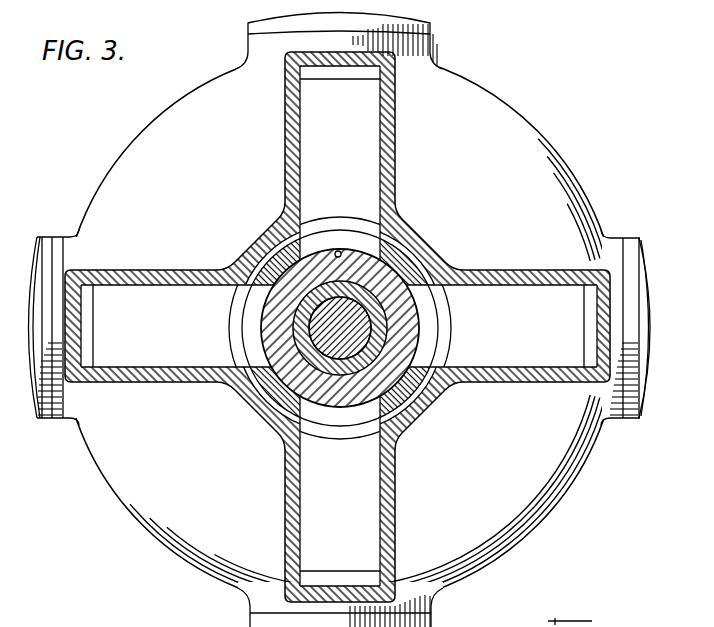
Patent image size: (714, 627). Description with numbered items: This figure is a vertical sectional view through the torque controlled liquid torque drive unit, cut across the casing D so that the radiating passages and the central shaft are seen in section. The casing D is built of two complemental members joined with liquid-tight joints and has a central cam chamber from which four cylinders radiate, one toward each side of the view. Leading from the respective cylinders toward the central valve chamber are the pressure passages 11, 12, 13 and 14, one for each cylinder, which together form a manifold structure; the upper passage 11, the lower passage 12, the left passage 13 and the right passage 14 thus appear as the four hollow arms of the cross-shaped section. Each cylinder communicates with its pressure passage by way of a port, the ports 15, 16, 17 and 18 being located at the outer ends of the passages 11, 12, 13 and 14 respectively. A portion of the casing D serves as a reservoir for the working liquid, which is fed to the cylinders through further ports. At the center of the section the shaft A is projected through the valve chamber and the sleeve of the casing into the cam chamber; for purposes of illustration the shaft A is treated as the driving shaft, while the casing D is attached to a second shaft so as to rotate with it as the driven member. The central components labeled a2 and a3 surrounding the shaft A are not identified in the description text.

The casing D is at (530, 123).
The pressure passage 11 is at (366, 157).
The pressure passage 12 is at (368, 512).
The pressure passage 13 is at (153, 350).
The pressure passage 14 is at (528, 353).
The port 15 is at (322, 80).
The port 16 is at (335, 568).
The port 17 is at (583, 313).
The port 18 is at (95, 311).
The shaft A is at (365, 309).
The bushing ring a2 is at (377, 337).
The central shaft a3 is at (420, 400).